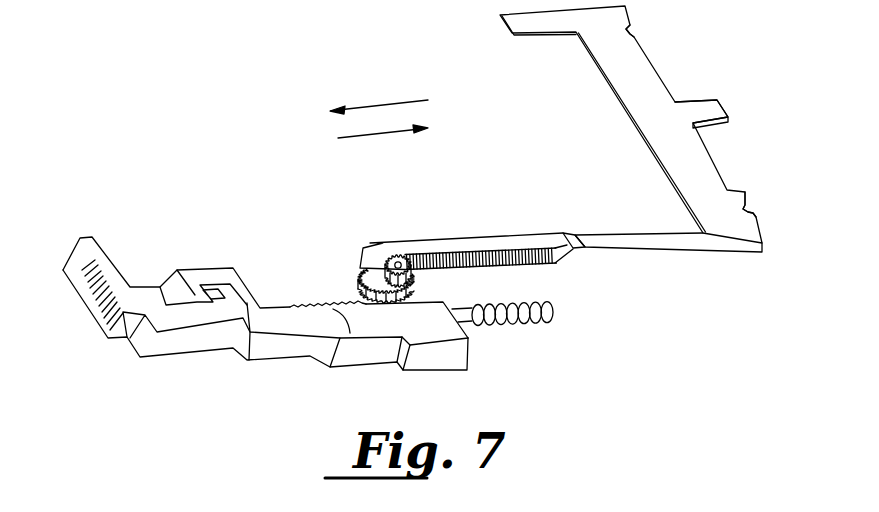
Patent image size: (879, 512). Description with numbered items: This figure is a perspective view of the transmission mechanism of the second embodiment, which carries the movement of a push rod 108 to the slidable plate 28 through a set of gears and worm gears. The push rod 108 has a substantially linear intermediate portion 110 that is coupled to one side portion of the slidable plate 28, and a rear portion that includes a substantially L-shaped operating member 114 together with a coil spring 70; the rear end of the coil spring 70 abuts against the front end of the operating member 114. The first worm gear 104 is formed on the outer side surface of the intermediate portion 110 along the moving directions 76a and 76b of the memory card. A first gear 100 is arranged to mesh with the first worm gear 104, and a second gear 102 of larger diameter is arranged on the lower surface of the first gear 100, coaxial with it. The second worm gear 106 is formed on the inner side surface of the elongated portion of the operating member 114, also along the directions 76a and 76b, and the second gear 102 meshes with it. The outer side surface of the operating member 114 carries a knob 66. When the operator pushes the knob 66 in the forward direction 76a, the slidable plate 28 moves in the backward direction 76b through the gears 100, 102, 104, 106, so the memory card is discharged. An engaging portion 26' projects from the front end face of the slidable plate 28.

The slidable plate 28 is at (654, 129).
The tab 26' is at (727, 100).
The intermediate portion 110 is at (528, 251).
The first worm gear 104 is at (495, 252).
The first gear 100 is at (392, 248).
The second gear 102 is at (412, 283).
The push rod 108 is at (295, 327).
The operating member 114 is at (297, 305).
The second worm gear 106 is at (335, 303).
The knob 66 is at (379, 370).
The coil spring 70 is at (553, 312).
The forward direction 76a is at (368, 137).
The backward direction 76b is at (370, 105).